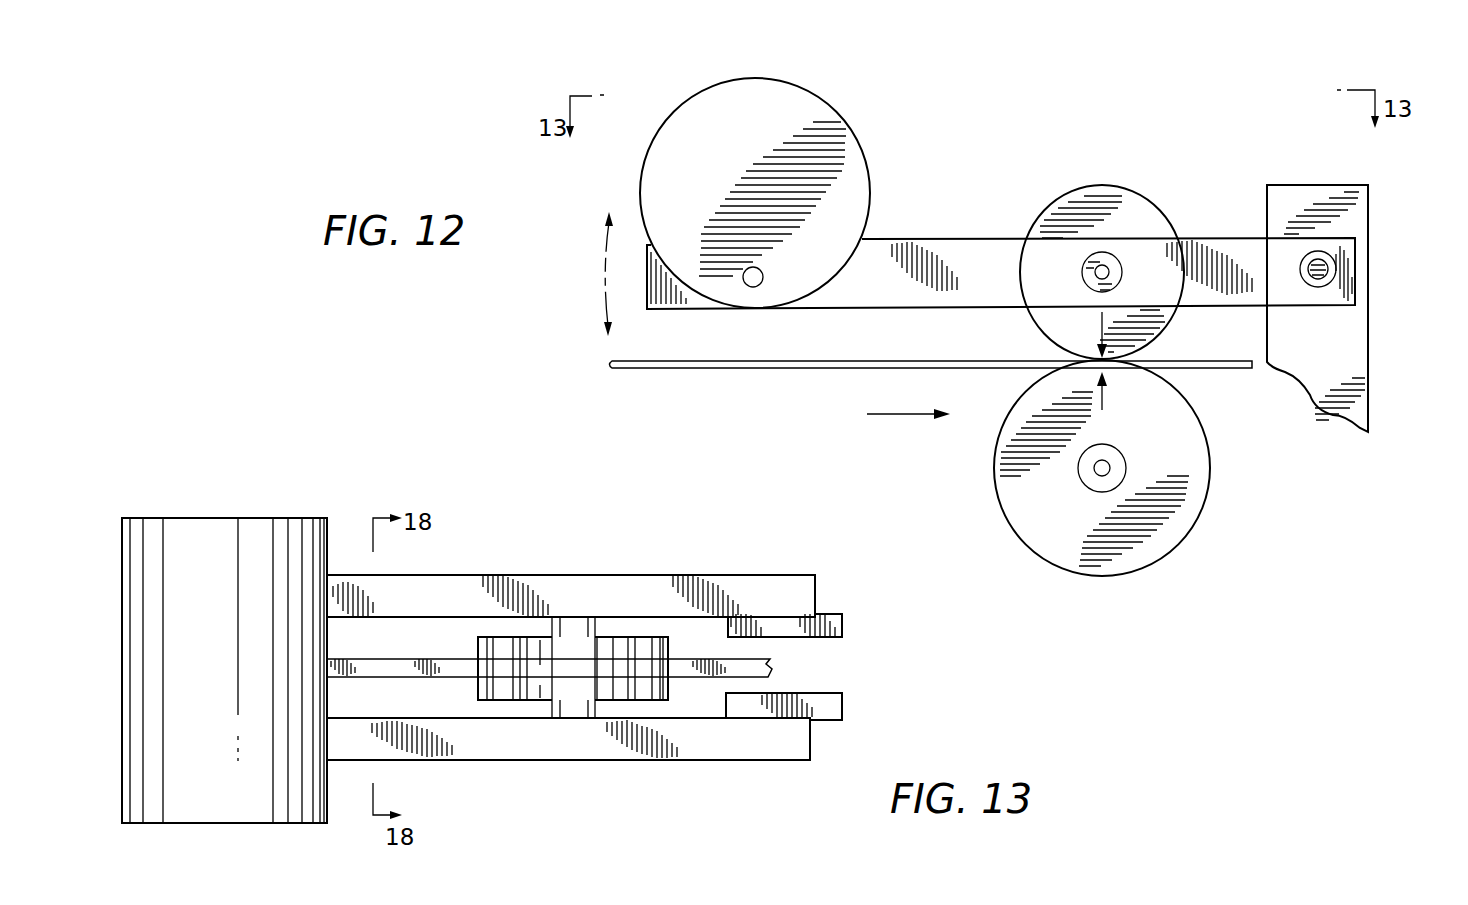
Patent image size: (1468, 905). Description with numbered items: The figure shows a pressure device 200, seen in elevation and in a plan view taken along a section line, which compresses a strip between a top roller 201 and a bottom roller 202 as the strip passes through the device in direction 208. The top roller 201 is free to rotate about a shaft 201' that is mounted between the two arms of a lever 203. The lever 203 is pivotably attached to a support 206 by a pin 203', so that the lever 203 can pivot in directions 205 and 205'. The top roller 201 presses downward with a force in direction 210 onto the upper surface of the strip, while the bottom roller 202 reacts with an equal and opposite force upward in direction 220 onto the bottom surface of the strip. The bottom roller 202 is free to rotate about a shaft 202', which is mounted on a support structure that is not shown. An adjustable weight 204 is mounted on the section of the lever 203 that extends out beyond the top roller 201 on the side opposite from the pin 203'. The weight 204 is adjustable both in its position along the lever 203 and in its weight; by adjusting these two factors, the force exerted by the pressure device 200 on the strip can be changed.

In FIG. 12, the adjustable weight 204 is at (805, 112).
In FIG. 13, the adjustable weight 204 is at (218, 543).
In FIG. 12, the lever 203 is at (1001, 241).
In FIG. 13, the lever 203 is at (571, 669).
In FIG. 12, the top roller 201 is at (1106, 256).
In FIG. 13, the top roller 201 is at (573, 717).
In FIG. 12, the shaft 201' is at (1066, 220).
In FIG. 12, the pin 203' is at (1364, 253).
In FIG. 12, the support 206 is at (1357, 328).
In FIG. 13, the support 206 is at (833, 618).
In FIG. 12, the bottom roller 202 is at (1120, 468).
In FIG. 12, the shaft 202' is at (1075, 483).
In FIG. 12, the direction 208 is at (908, 431).
In FIG. 12, the direction 210 is at (1081, 335).
In FIG. 12, the direction 220 is at (1124, 393).
In FIG. 12, the pressure device 200 is at (1253, 403).
In FIG. 12, the direction 205 is at (583, 277).
In FIG. 12, the direction 205' is at (568, 237).